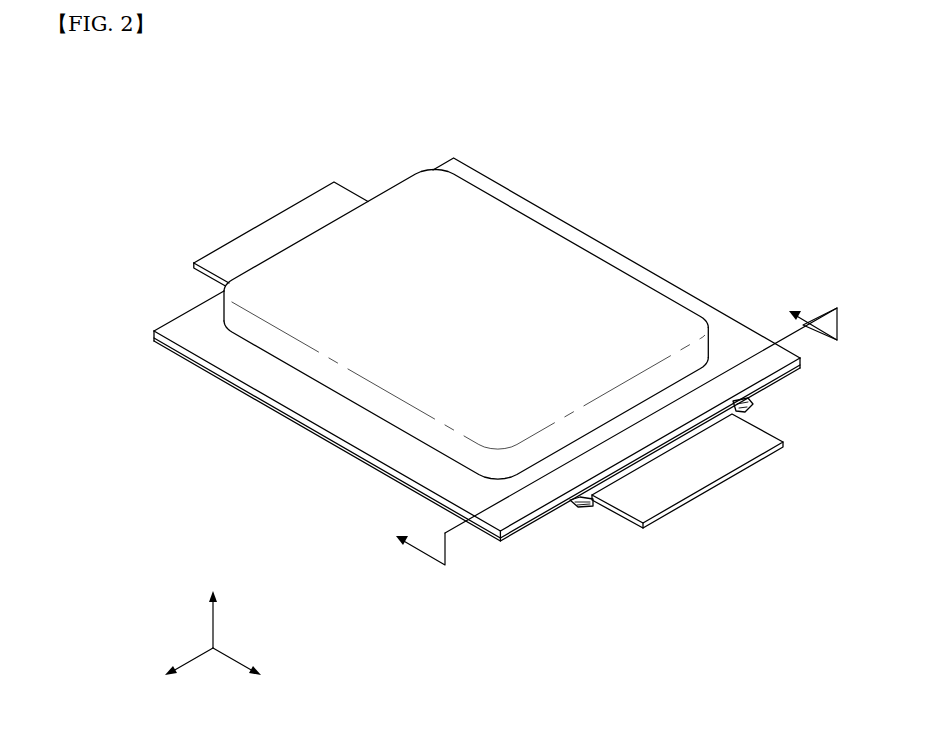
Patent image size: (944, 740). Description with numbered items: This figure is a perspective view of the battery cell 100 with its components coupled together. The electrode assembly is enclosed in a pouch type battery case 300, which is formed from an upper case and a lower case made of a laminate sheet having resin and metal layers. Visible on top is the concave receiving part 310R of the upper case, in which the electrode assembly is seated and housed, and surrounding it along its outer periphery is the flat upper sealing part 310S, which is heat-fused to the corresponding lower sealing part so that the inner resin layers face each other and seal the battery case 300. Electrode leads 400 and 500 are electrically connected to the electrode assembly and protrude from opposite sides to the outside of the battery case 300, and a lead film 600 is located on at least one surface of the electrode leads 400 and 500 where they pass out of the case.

The battery cell 100 is at (406, 89).
The pouch type battery case 300 is at (648, 240).
The receiving part 310R is at (530, 254).
The upper sealing part 310S is at (285, 383).
The electrode lead 400 is at (640, 503).
The electrode lead 500 is at (270, 237).
The lead film 600 is at (748, 402).